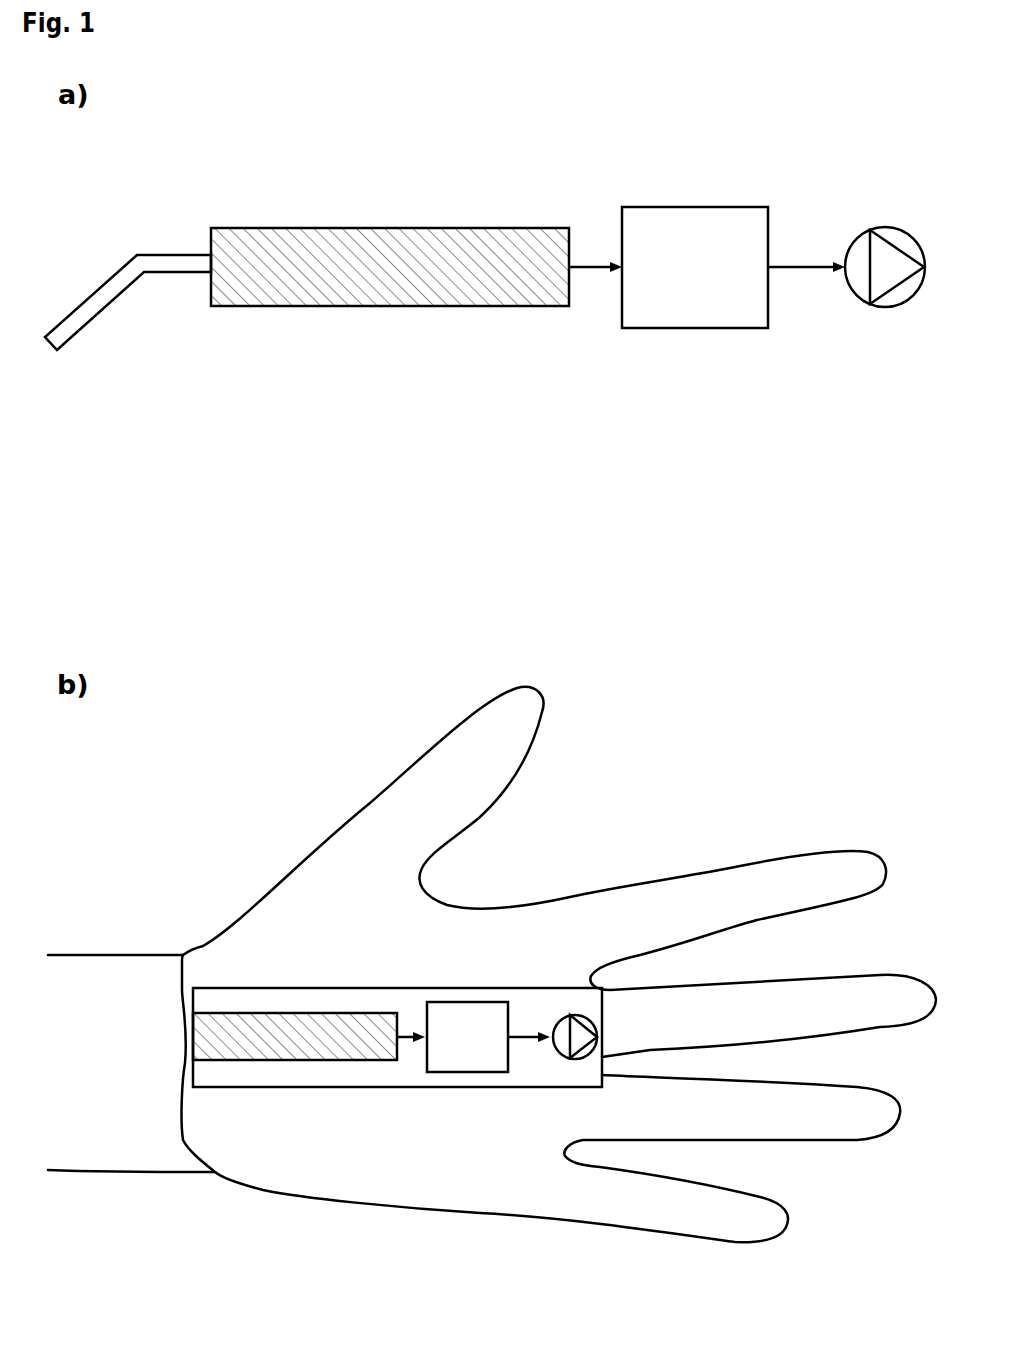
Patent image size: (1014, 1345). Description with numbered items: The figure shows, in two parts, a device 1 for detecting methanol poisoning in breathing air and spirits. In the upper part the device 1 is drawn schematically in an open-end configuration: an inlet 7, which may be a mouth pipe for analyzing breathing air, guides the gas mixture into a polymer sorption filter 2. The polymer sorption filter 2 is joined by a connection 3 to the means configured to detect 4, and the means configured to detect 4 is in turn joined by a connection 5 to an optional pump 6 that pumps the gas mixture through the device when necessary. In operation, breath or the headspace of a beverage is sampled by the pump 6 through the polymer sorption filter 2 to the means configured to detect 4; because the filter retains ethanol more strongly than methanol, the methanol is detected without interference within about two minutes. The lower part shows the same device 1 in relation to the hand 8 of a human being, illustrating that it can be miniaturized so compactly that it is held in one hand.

The device 1 is at (376, 152).
The polymer sorption filter 2 is at (408, 278).
The connection 3 is at (603, 268).
The means configured to detect 4 is at (690, 280).
The connection 5 is at (787, 263).
The pump 6 is at (880, 305).
The inlet 7 is at (85, 313).
The hand 8 is at (352, 918).